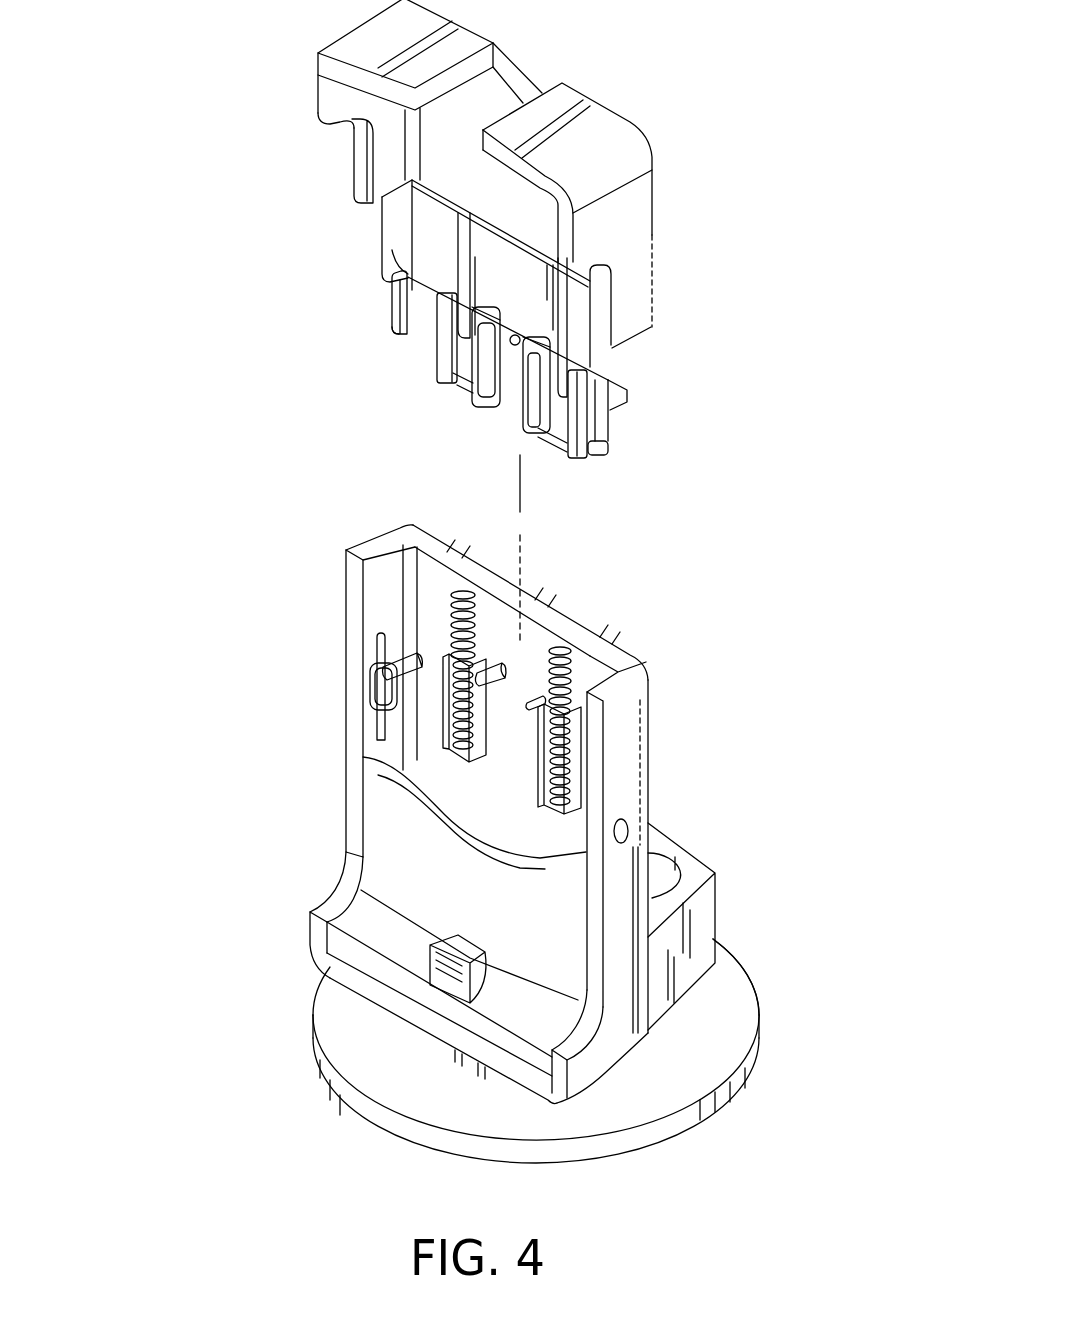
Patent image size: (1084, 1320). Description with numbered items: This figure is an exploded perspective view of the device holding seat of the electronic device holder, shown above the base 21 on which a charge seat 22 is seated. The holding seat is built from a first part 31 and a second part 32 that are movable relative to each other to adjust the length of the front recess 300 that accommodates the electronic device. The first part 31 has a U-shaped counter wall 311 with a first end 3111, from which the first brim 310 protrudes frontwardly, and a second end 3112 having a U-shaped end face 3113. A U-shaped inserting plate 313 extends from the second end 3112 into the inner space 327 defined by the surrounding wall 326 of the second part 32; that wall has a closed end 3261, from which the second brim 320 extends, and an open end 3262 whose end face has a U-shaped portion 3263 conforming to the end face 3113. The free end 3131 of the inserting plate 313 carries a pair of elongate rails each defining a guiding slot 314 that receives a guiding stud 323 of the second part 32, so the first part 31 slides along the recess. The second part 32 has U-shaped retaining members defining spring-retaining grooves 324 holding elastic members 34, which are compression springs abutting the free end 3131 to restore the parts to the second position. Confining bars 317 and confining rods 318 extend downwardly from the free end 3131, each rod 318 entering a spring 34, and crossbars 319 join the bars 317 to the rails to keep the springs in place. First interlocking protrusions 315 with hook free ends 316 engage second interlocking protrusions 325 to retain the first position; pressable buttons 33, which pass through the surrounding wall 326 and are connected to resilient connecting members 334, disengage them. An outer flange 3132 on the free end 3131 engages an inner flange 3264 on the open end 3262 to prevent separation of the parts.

The base 21 is at (703, 1067).
The charge seat 22 is at (698, 917).
The first part 31 is at (692, 147).
The second part 32 is at (295, 921).
The pressable button 33 is at (372, 692).
The elastic member 34 is at (530, 795).
The front recess 300 is at (388, 820).
The first brim 310 is at (342, 58).
The U-shaped counter wall 311 is at (363, 147).
The U-shaped inserting plate 313 is at (612, 377).
The guiding slot 314 is at (466, 390).
The first interlocking protrusion 315 is at (376, 299).
The hook free end 316 is at (392, 325).
The confining bar 317 is at (437, 363).
The confining rod 318 is at (550, 337).
The crossbar 319 is at (452, 388).
The second brim 320 is at (433, 1030).
The guiding stud 323 is at (490, 690).
The spring-retaining groove 324 is at (578, 708).
The second interlocking protrusion 325 is at (380, 665).
The surrounding wall 326 is at (625, 880).
The inner space 327 is at (582, 806).
The resilient connecting member 334 is at (380, 739).
The first end of U-shaped counter wall 3111 is at (517, 85).
The second end of U-shaped counter wall 3112 is at (650, 328).
The U-shaped end face 3113 is at (645, 336).
The free end of U-shaped inserting plate 3131 is at (392, 252).
The outer flange 3132 is at (628, 400).
The closed end of surrounding wall 3261 is at (643, 1037).
The open end of surrounding wall 3262 is at (651, 670).
The U-shaped portion of end face 3263 is at (620, 646).
The inner flange 3264 is at (378, 572).